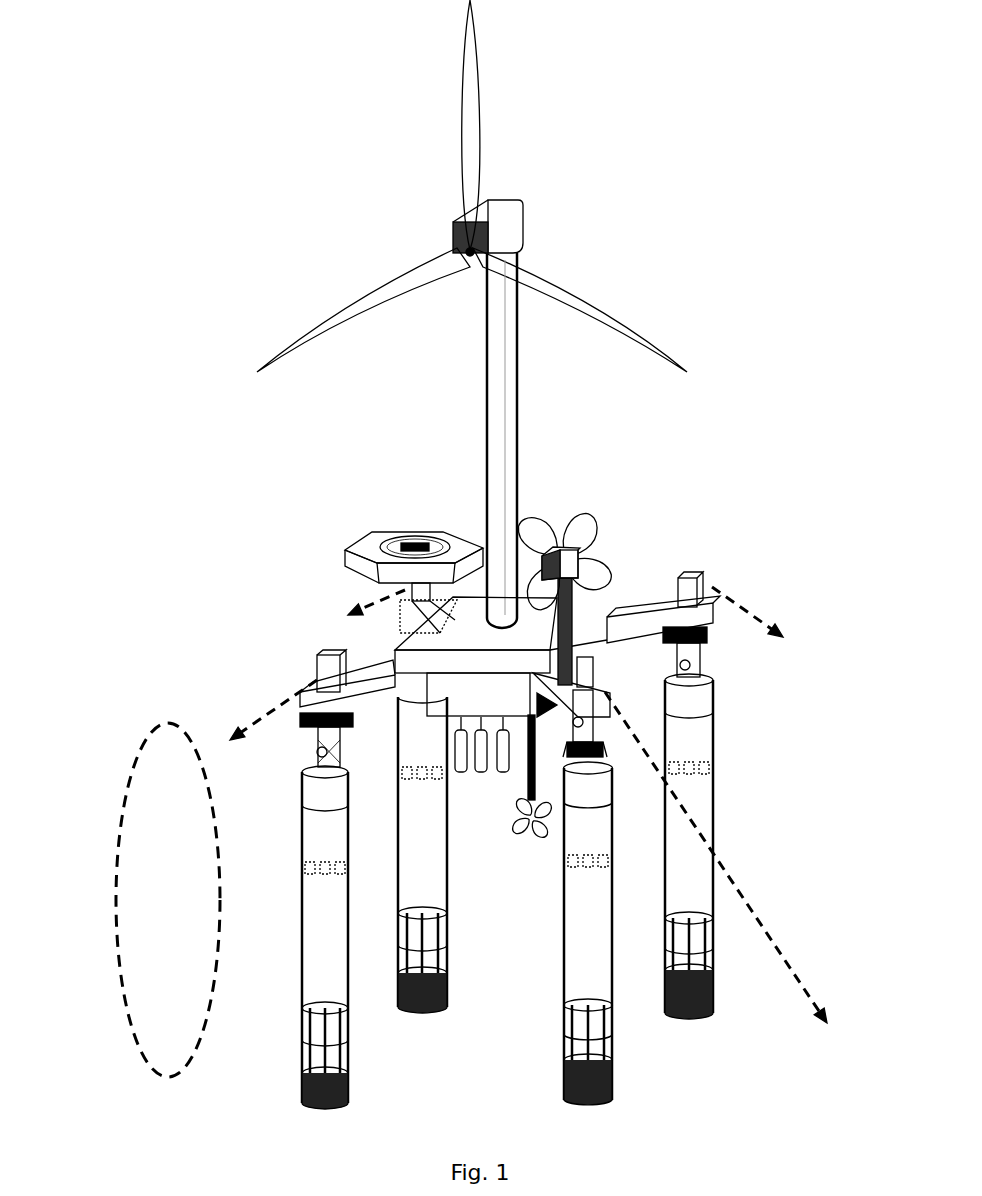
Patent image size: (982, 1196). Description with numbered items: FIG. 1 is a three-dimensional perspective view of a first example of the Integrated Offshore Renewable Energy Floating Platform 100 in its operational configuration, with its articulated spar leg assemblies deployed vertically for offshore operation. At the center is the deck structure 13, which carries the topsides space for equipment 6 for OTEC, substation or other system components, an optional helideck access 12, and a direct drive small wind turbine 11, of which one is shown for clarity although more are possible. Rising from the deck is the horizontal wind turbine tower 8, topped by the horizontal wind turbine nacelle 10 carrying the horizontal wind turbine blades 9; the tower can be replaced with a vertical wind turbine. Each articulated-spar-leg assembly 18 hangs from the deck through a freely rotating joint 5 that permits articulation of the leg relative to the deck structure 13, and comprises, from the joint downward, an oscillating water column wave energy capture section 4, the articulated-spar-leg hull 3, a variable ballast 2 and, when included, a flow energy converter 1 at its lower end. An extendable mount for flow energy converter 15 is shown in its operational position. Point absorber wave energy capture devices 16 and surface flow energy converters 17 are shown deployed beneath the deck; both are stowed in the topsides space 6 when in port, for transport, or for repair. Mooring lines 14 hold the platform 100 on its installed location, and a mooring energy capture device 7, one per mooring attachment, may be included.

The Integrated Offshore Renewable Energy Floating Platform 100 is at (647, 118).
The flow energy converter 1 is at (302, 1068).
The variable ballast 2 is at (313, 990).
The articulated-spar-leg hull 3 is at (318, 935).
The oscillating water column wave energy capture section 4 is at (300, 866).
The freely rotating joint 5 is at (318, 742).
The topsides space for equipment 6 is at (410, 633).
The mooring energy capture device 7 is at (317, 653).
The horizontal wind turbine tower 8 is at (497, 460).
The horizontal wind turbine blades 9 is at (367, 297).
The horizontal wind turbine nacelle 10 is at (455, 220).
The direct drive small wind turbine 11 is at (572, 522).
The helideck access 12 is at (390, 532).
The deck structure 13 is at (648, 602).
The mooring lines 14 is at (757, 920).
The extendable mount for flow energy converter 15 is at (613, 1050).
The point absorber wave energy capture devices 16 is at (458, 773).
The surface flow energy converters 17 is at (536, 845).
The articulated-spar-leg assembly 18 is at (200, 865).